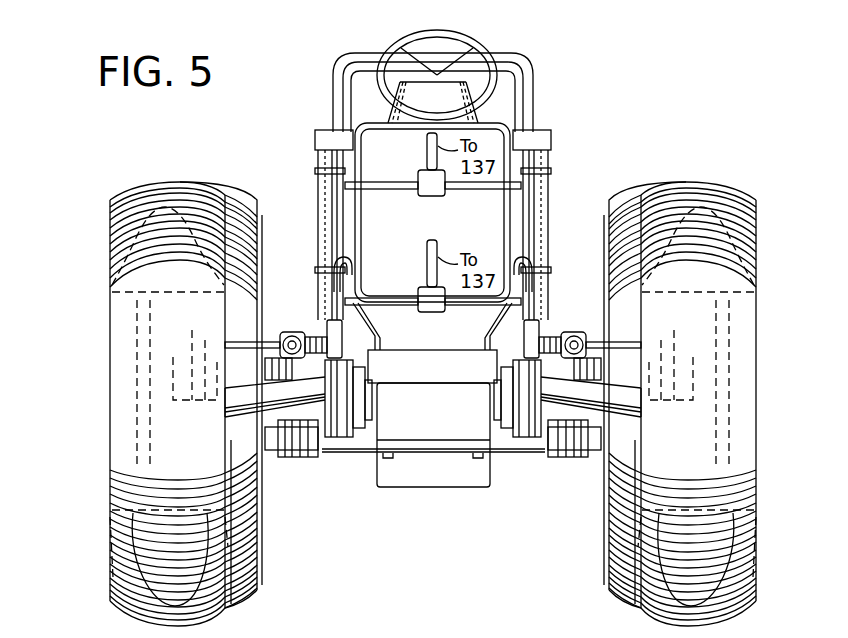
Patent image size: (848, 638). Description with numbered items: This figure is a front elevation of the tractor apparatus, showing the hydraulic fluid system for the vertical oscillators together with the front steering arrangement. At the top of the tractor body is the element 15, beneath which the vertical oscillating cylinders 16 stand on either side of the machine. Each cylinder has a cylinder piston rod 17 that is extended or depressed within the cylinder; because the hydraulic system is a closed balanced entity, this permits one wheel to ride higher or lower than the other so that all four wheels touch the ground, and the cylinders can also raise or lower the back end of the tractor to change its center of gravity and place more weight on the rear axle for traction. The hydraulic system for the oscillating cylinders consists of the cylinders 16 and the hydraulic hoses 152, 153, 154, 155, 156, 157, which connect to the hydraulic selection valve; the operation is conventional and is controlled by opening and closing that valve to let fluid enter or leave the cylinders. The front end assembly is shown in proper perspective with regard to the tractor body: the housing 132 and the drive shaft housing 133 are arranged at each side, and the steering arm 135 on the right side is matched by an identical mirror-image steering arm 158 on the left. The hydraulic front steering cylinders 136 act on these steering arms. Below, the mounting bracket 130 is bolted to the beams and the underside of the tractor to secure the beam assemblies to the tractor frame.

The roll bar 15 is at (510, 56).
The vertical oscillating cylinder 16 is at (316, 222).
The cylinder piston rod 17 is at (540, 295).
The mounting bracket 130 is at (357, 453).
The housing 132 is at (147, 385).
The drive shaft housing 133 is at (303, 420).
The steering arm 135 is at (243, 342).
The hydraulic steering cylinder 136 is at (309, 334).
The hydraulic hose 152 is at (393, 306).
The hydraulic hose 153 is at (476, 306).
The hydraulic hose 154 is at (391, 190).
The hydraulic hose 155 is at (476, 190).
The hydraulic hose 156 is at (427, 270).
The hydraulic hose 157 is at (427, 160).
The steering arm 158 is at (614, 344).